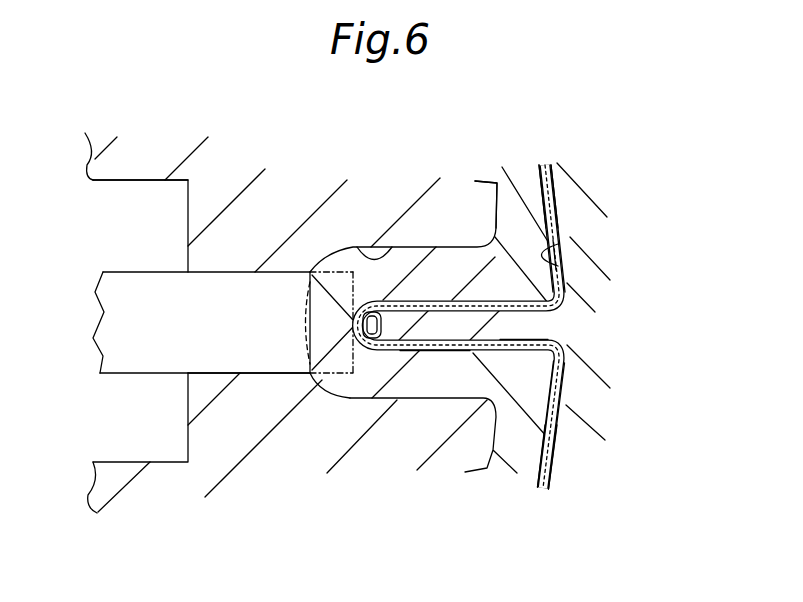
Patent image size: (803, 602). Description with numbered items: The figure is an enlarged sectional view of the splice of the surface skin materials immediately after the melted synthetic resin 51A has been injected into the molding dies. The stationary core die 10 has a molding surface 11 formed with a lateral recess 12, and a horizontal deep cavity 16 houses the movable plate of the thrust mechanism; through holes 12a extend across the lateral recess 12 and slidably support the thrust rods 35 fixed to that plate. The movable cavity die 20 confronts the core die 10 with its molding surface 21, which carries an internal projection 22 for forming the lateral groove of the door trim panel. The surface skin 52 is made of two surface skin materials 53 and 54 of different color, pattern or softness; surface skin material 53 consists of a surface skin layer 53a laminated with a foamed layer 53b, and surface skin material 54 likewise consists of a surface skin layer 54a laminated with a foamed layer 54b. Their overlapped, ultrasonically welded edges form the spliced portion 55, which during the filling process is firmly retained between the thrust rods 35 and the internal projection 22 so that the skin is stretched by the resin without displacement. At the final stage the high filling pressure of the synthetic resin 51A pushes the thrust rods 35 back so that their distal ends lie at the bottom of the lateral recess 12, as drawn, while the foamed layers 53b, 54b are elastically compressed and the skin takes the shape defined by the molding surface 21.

The core die 10 is at (273, 195).
The molding surface 11 is at (496, 180).
The lateral recess 12 is at (353, 247).
The through hole 12a is at (213, 371).
The horizontal deep cavity 16 is at (125, 185).
The cavity die 20 is at (588, 284).
The molding surface 21 is at (560, 238).
The internal projection 22 is at (540, 321).
The thrust rod 35 is at (132, 289).
The melted synthetic resin 51A is at (372, 383).
The surface skin 52 is at (432, 352).
The surface skin material 53 is at (565, 207).
The surface skin layer 53a is at (562, 172).
The foamed layer 53b is at (531, 172).
The surface skin material 54 is at (568, 418).
The surface skin layer 54a is at (553, 485).
The foamed layer 54b is at (537, 447).
The spliced portion 55 is at (355, 322).